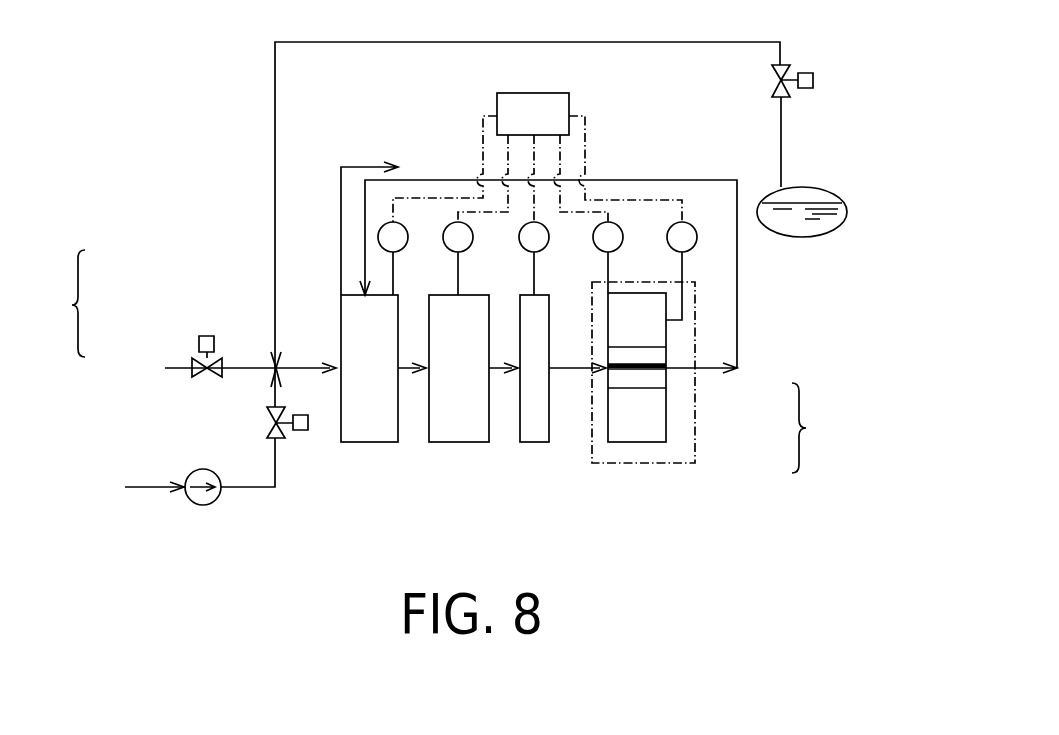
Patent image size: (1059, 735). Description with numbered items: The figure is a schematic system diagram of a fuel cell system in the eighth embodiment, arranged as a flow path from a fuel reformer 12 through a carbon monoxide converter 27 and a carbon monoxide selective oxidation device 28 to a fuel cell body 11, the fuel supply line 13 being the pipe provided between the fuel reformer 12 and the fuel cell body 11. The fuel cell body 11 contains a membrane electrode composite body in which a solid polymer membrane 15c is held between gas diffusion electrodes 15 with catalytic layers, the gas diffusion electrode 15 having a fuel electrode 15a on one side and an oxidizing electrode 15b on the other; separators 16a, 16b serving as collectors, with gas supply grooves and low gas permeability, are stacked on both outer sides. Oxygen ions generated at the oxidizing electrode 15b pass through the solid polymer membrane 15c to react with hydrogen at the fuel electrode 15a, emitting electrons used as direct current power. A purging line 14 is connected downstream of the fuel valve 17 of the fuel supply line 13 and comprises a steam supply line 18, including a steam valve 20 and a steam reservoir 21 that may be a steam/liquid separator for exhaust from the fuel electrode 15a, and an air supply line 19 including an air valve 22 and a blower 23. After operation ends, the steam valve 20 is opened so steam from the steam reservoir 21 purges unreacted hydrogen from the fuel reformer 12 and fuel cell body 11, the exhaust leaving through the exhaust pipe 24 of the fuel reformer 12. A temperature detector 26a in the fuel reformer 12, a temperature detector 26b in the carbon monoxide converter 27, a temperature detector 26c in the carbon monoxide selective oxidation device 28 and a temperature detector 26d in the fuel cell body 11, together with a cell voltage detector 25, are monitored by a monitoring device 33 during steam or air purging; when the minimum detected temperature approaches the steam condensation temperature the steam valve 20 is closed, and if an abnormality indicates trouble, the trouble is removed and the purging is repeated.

The fuel cell body 11 is at (593, 468).
The fuel reformer 12 is at (370, 445).
The fuel supply line 13 is at (565, 367).
The purging line 14 is at (61, 303).
The gas diffusion electrode 15 is at (726, 397).
The fuel electrode 15a is at (653, 380).
The oxidizing electrode 15b is at (658, 355).
The solid polymer membrane 15c is at (658, 372).
The separator 16a is at (657, 442).
The separator 16b is at (667, 338).
The fuel valve 17 is at (207, 335).
The steam supply line 18 is at (275, 242).
The air supply line 19 is at (148, 487).
The steam valve 20 is at (783, 63).
The steam reservoir 21 is at (832, 190).
The air valve 22 is at (302, 432).
The blower 23 is at (203, 505).
The exhaust pipe 24 is at (355, 163).
The cell voltage detector 25 is at (696, 242).
The temperature detector 26a is at (406, 243).
The temperature detector 26b is at (471, 243).
The temperature detector 26c is at (547, 243).
The temperature detector 26d is at (622, 242).
The carbon monoxide converter 27 is at (455, 445).
The carbon monoxide selective oxidation device 28 is at (532, 445).
The monitoring device 33 is at (548, 93).